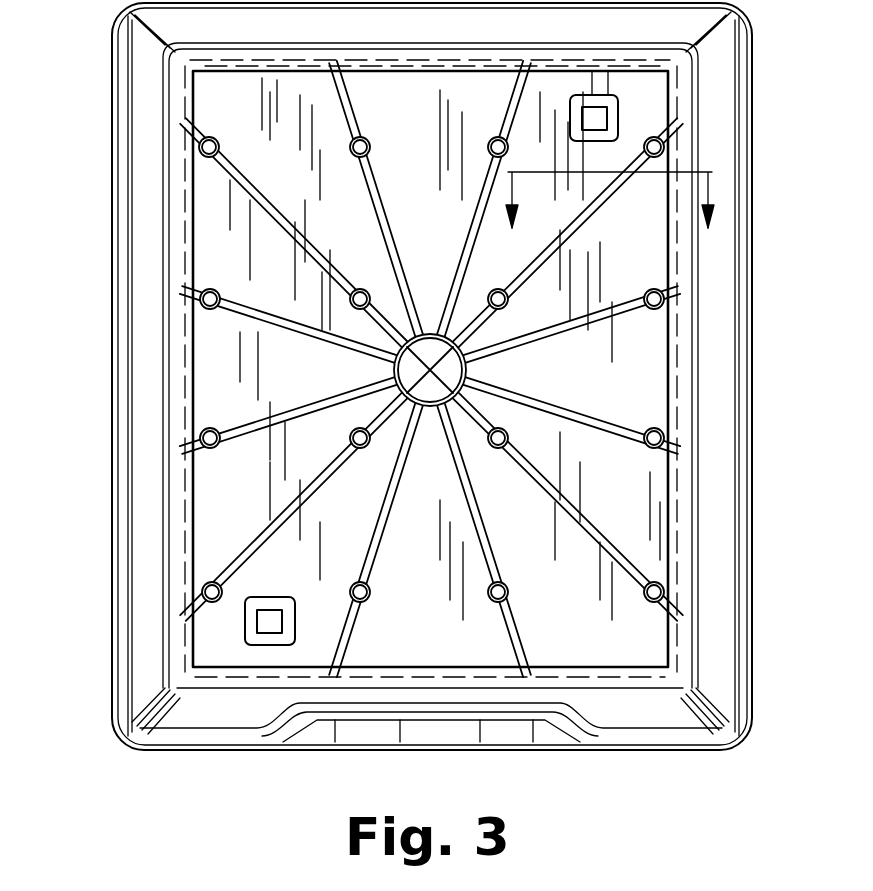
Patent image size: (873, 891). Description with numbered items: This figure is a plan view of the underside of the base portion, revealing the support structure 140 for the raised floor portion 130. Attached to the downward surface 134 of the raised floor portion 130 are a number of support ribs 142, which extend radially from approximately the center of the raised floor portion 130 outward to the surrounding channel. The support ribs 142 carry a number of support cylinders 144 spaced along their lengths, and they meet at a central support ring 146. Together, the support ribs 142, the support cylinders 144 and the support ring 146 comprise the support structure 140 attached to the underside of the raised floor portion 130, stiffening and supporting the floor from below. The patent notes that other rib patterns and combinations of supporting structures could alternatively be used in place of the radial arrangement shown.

The raised floor portion 130 is at (222, 367).
The downward surface 134 is at (633, 503).
The support structure 140 is at (248, 193).
The support ribs 142 is at (225, 418).
The support cylinders 144 is at (488, 144).
The support ring 146 is at (470, 372).